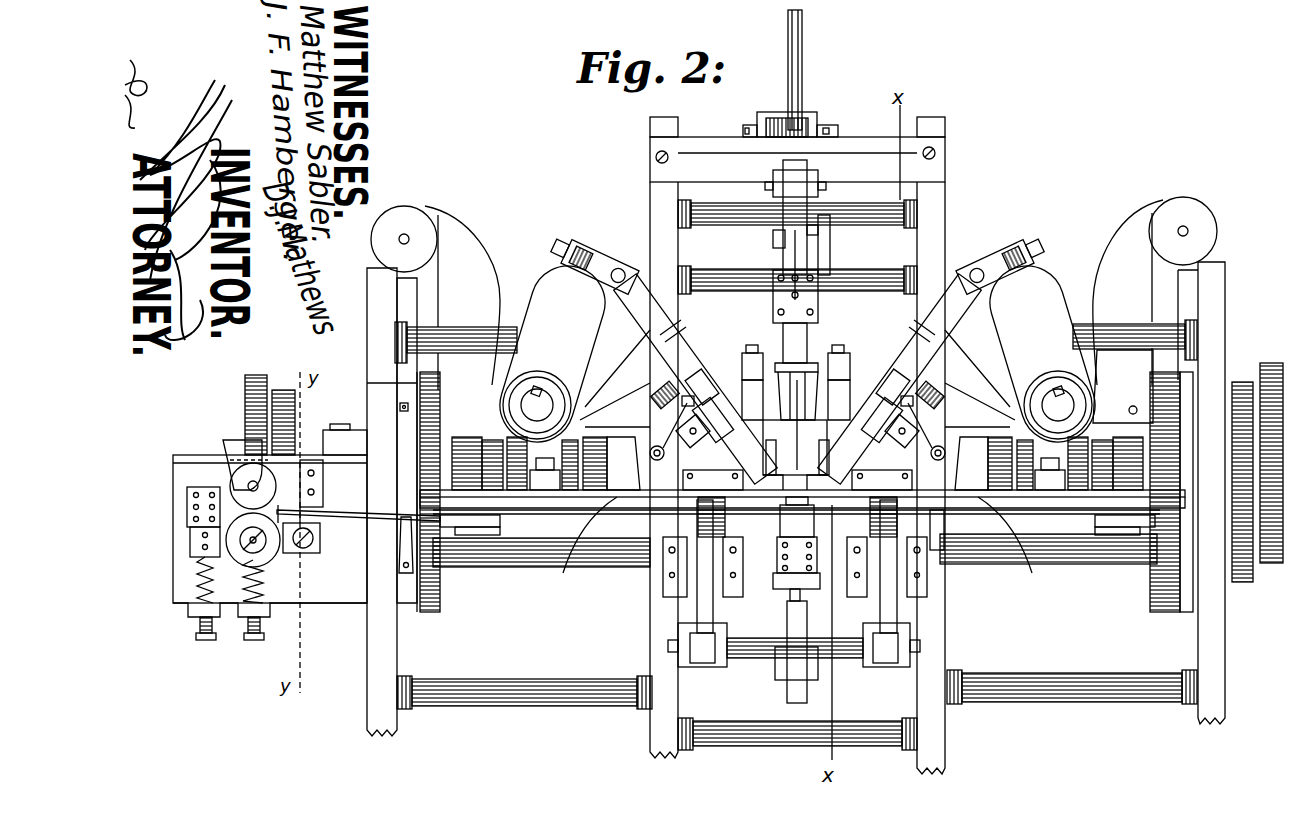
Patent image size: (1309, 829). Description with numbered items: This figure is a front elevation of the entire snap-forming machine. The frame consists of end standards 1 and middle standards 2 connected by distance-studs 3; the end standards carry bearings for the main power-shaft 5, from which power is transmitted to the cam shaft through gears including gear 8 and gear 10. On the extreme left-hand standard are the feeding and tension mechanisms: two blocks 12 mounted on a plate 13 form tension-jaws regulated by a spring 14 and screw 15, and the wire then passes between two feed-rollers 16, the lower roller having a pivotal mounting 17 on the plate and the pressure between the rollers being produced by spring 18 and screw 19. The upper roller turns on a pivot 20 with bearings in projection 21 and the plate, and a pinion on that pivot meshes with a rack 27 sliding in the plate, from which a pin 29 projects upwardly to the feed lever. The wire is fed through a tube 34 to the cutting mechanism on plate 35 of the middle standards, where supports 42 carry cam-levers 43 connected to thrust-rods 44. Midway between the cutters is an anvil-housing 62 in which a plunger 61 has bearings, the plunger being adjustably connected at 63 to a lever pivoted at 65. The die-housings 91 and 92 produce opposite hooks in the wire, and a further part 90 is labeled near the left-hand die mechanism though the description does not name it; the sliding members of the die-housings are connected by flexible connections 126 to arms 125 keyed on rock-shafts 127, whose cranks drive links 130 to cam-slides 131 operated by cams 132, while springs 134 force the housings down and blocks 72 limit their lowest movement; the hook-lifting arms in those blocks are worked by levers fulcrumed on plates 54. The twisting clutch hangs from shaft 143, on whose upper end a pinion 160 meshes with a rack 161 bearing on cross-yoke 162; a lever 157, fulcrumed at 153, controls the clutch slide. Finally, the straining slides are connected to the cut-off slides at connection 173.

The end standard 1 is at (368, 283).
The middle standard 2 is at (650, 127).
The distance-stud 3 is at (462, 350).
The main power-shaft 5 is at (506, 568).
The gear 8 is at (256, 375).
The gear 10 is at (289, 392).
The tension block 12 is at (194, 506).
The plate 13 is at (308, 550).
The spring 14 is at (200, 586).
The screw 15 is at (200, 628).
The feed-roller 16 is at (313, 490).
The pivotal mounting 17 is at (320, 546).
The spring 18 is at (262, 583).
The screw 19 is at (263, 636).
The pivot 20 is at (250, 485).
The projection 21 is at (236, 445).
The rack 27 is at (188, 472).
The pin 29 is at (336, 455).
The tube 34 is at (388, 514).
The plate 35 is at (938, 552).
The support 42 is at (663, 560).
The cam-lever 43 is at (688, 580).
The thrust-rod 44 is at (678, 650).
The plate 54 is at (802, 498).
The plunger 61 is at (787, 603).
The anvil-housing 62 is at (777, 557).
The adjustable connection 63 is at (772, 680).
The pivot 65 is at (740, 666).
The block 72 is at (750, 418).
The crank 90 is at (718, 455).
The die-housing 91 is at (688, 356).
The die-housing 92 is at (900, 348).
The arm 125 is at (575, 354).
The flexible connection 126 is at (603, 272).
The rock-shaft 127 is at (540, 402).
The link 130 is at (794, 311).
The cam-slide 131 is at (794, 234).
The cam 132 is at (440, 602).
The spring 134 is at (683, 438).
The shaft 143 is at (800, 63).
The fulcrum 153 is at (737, 219).
The lever 157 is at (840, 240).
The pinion 160 is at (810, 122).
The rack 161 is at (767, 127).
The cross-yoke 162 is at (847, 143).
The connection 173 is at (804, 548).